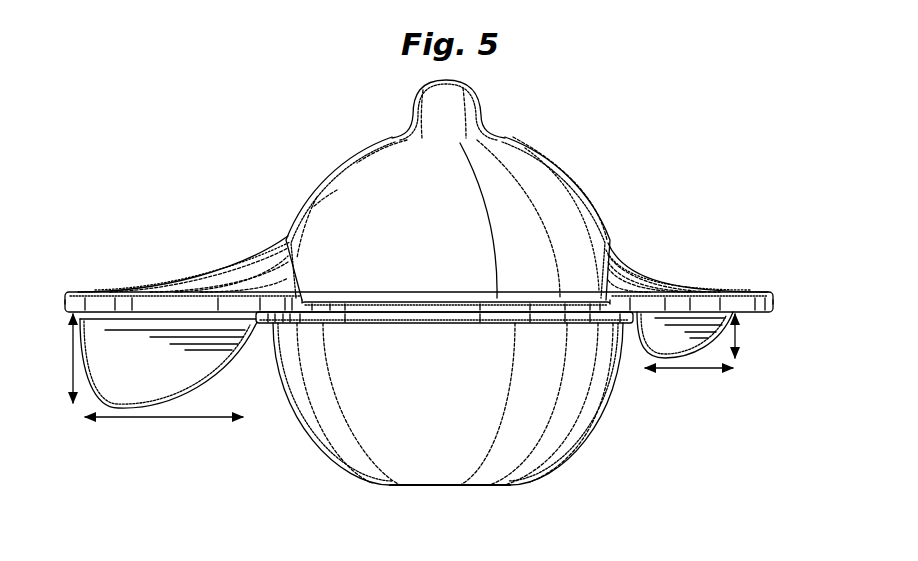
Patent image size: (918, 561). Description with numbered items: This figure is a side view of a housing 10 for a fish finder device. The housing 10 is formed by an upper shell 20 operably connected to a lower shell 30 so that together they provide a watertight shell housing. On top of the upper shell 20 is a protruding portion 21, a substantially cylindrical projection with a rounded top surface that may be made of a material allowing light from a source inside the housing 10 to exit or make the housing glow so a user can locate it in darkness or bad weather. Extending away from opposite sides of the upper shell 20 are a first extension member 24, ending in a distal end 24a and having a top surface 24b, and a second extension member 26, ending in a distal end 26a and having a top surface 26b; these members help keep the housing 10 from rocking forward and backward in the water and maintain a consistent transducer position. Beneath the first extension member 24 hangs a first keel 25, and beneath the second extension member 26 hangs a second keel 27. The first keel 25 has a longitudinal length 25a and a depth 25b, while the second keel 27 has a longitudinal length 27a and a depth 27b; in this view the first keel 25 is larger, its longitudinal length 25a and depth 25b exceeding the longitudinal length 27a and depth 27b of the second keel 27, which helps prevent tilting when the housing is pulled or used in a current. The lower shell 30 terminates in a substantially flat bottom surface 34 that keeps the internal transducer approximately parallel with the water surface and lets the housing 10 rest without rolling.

The housing 10 is at (566, 94).
The upper shell 20 is at (423, 236).
The protruding portion 21 is at (436, 108).
The first extension member 24 is at (135, 280).
The distal end 24a is at (68, 295).
The top surface 24b is at (215, 282).
The first keel 25 is at (142, 375).
The longitudinal length 25a is at (158, 418).
The depth 25b is at (73, 365).
The second extension member 26 is at (735, 282).
The distal end 26a is at (772, 297).
The top surface 26b is at (662, 282).
The second keel 27 is at (682, 346).
The longitudinal length 27a is at (737, 338).
The depth 27b is at (687, 368).
The lower shell 30 is at (403, 373).
The substantially flat bottom surface 34 is at (481, 505).